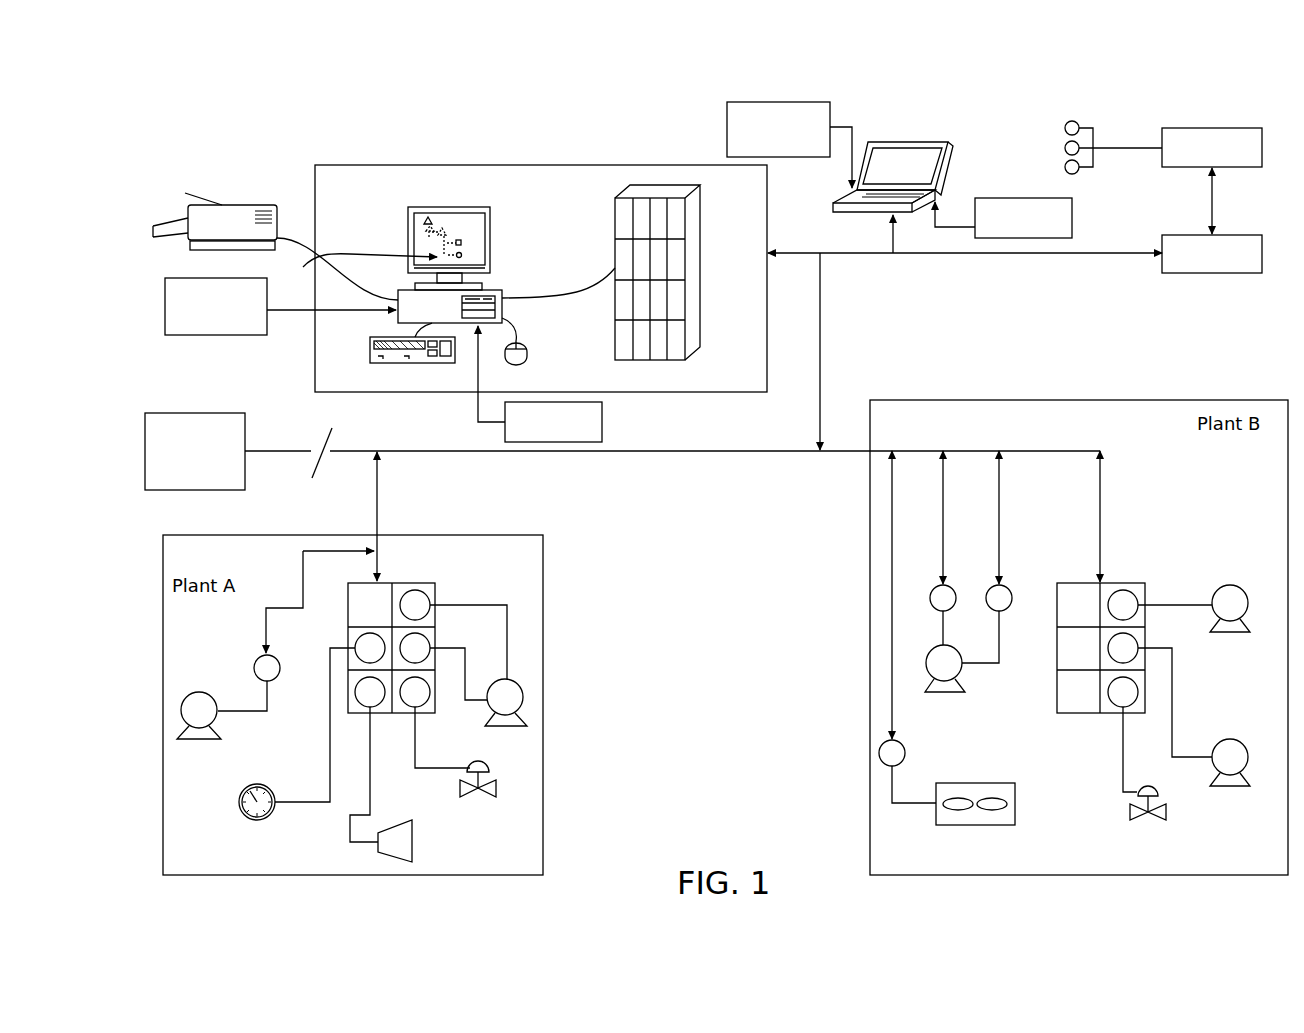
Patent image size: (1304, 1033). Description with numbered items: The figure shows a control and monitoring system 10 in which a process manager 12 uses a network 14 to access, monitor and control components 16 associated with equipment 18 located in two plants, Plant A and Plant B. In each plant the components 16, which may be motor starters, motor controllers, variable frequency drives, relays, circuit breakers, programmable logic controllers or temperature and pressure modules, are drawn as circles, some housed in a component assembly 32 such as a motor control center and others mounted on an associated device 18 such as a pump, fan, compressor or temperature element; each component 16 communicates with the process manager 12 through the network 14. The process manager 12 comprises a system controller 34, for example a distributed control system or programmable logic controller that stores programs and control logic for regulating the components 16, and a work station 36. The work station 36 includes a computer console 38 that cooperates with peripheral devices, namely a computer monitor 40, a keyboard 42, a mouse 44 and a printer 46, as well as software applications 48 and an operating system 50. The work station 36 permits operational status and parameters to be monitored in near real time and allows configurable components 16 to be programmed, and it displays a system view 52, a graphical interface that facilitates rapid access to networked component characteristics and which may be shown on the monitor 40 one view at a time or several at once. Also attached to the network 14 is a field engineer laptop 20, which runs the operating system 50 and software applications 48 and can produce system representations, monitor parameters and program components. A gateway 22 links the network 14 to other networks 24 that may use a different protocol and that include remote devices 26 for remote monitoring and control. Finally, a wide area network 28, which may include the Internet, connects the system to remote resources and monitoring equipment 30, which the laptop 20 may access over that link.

The control and monitoring system 10 is at (257, 384).
The process manager 12 is at (546, 167).
The network 14 is at (756, 447).
The components 16 is at (255, 663).
The equipment 18 is at (1244, 650).
The field engineer laptop 20 is at (940, 141).
The gateway 22 is at (1180, 236).
The other networks 24 is at (1234, 113).
The remote devices 26 is at (1056, 122).
The wide area network 28 is at (349, 451).
The remote resources and monitoring equipment 30 is at (203, 413).
The component assembly 32 is at (403, 583).
The system controller 34 is at (615, 222).
The work station 36 is at (390, 228).
The computer console 38 is at (501, 229).
The computer monitor 40 is at (443, 221).
The keyboard 42 is at (408, 364).
The mouse 44 is at (527, 357).
The printer 46 is at (244, 206).
The software applications 48 is at (602, 432).
The operating system 50 is at (216, 277).
The system view 52 is at (354, 269).